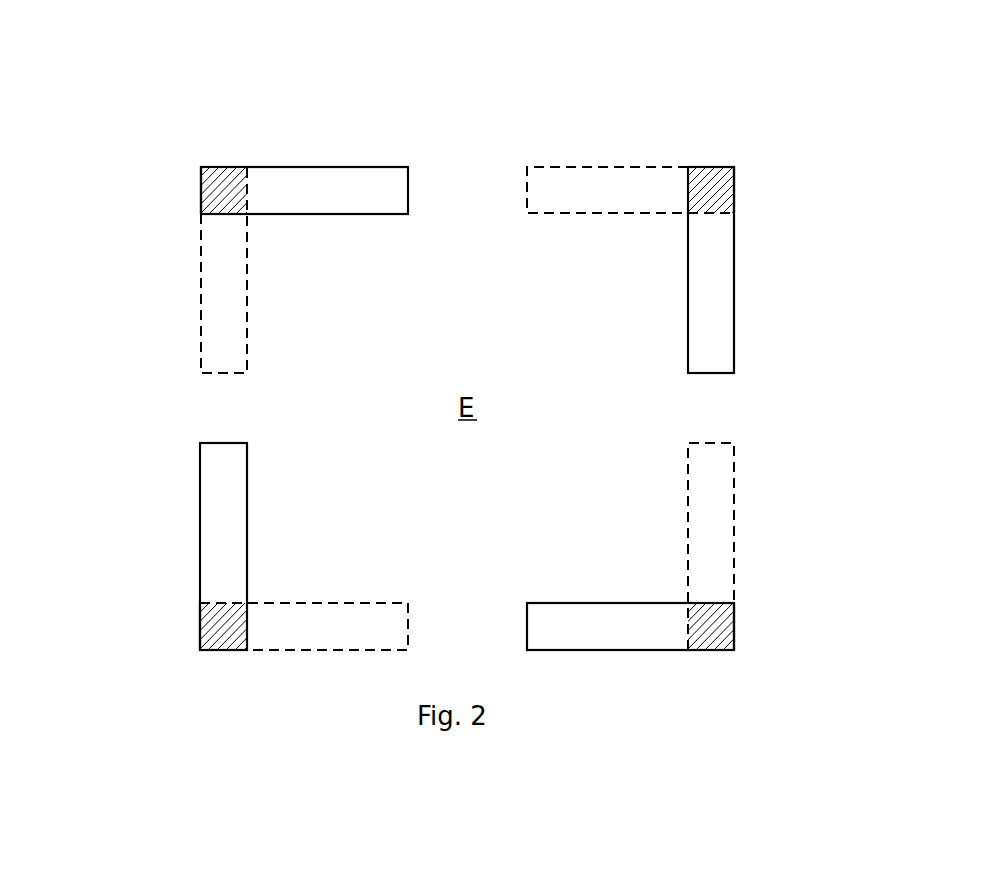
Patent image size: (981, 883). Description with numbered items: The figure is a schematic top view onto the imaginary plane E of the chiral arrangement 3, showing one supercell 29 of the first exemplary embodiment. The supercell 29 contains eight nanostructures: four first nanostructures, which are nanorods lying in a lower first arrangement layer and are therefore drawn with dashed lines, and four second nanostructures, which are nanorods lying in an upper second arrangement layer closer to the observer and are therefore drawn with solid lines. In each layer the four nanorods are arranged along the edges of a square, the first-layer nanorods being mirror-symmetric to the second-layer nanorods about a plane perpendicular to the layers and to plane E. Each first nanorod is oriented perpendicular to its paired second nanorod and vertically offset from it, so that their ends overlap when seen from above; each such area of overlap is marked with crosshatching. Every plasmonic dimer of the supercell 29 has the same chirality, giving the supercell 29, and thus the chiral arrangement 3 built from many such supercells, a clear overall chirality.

The chiral arrangement 3 is at (692, 195).
The supercell 29 is at (692, 195).